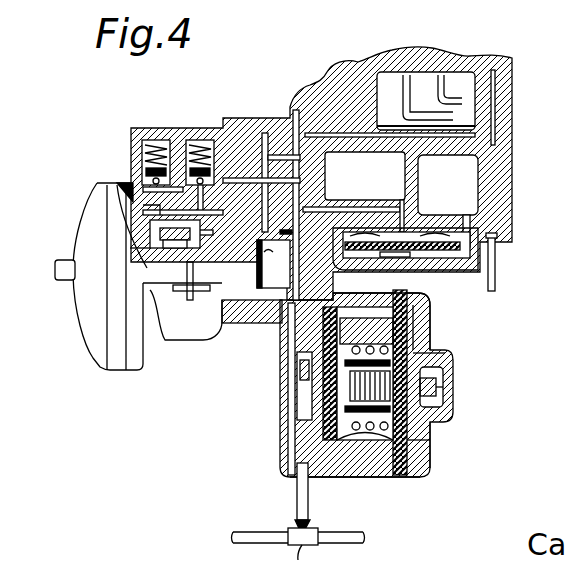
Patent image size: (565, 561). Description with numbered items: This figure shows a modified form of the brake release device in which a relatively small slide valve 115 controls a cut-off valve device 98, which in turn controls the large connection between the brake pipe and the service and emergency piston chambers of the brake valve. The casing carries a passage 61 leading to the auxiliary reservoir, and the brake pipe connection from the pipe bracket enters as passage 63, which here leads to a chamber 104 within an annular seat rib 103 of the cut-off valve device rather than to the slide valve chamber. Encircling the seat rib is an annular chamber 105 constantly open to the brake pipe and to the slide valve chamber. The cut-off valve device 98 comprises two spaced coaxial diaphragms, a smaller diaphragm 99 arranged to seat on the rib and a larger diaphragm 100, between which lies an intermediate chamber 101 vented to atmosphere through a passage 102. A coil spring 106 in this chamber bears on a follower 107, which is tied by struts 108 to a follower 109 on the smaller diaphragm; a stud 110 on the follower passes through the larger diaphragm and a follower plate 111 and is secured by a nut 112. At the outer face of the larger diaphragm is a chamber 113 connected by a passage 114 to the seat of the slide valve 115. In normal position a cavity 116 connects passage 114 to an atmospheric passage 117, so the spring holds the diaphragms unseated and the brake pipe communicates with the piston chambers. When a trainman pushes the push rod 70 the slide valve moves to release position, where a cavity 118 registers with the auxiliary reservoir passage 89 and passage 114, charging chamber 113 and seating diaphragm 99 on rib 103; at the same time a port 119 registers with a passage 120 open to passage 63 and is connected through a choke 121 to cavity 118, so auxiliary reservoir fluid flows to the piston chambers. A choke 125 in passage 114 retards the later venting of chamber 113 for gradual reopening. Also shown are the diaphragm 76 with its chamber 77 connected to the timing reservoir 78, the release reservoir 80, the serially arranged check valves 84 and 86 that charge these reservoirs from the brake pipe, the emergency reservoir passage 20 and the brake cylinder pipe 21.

The passage 20 is at (455, 104).
The pipe 21 is at (406, 110).
The passage 61 is at (496, 103).
The passage 63 is at (298, 130).
The push rod 70 is at (60, 268).
The flexible diaphragm 76 is at (430, 250).
The chamber 77 is at (450, 255).
The timing reservoir 78 is at (468, 173).
The release reservoir 80 is at (377, 163).
The check valves 84 is at (160, 128).
The check valves 86 is at (209, 185).
The passage 89 is at (365, 176).
The cut-off valve device 98 is at (433, 318).
The flexible diaphragm 99 is at (313, 463).
The flexible diaphragm 100 is at (413, 455).
The intermediate chamber 101 is at (422, 485).
The passage 102 is at (380, 487).
The annular seat rib 103 is at (317, 415).
The chamber 104 is at (308, 387).
The annular chamber 105 is at (317, 357).
The coil spring 106 is at (353, 463).
The follower 107 is at (427, 424).
The struts 108 is at (413, 487).
The follower 109 is at (430, 353).
The stud 110 is at (437, 408).
The follower plate 111 is at (437, 364).
The nut 112 is at (437, 386).
The chamber 113 is at (417, 473).
The passage 114 is at (143, 212).
The slide valve 115 is at (133, 248).
The cavity 116 is at (140, 262).
The atmospheric passage 117 is at (143, 224).
The cavity 118 is at (147, 280).
The port 119 is at (250, 262).
The passage 120 is at (292, 232).
The choke 121 is at (212, 284).
The choke 125 is at (140, 243).